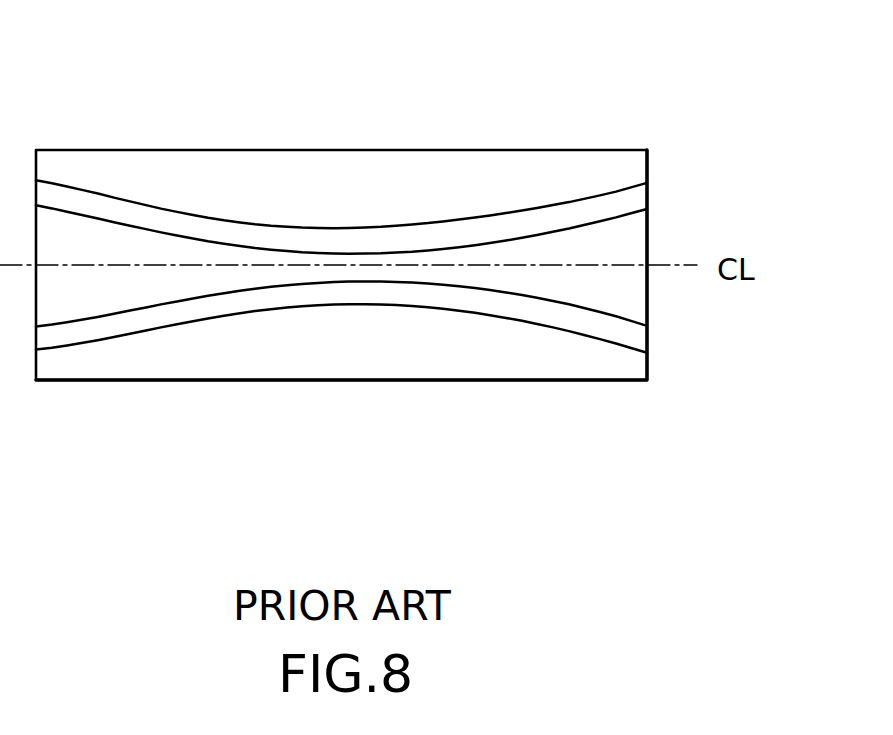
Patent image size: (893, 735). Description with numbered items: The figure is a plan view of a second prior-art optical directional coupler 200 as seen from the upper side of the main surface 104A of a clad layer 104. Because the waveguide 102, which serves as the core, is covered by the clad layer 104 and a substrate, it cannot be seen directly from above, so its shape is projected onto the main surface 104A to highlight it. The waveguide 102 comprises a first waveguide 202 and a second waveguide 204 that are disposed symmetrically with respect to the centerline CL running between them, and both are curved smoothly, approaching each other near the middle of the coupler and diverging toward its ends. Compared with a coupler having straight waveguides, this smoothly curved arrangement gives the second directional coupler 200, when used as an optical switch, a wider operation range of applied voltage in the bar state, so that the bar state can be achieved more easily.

The second prior-art directional coupler 200 is at (671, 117).
The clad layer 104 is at (80, 367).
The main surface of the clad layer 104A is at (341, 265).
The waveguide 102 is at (422, 457).
The first waveguide 202 is at (313, 247).
The second waveguide 204 is at (377, 298).